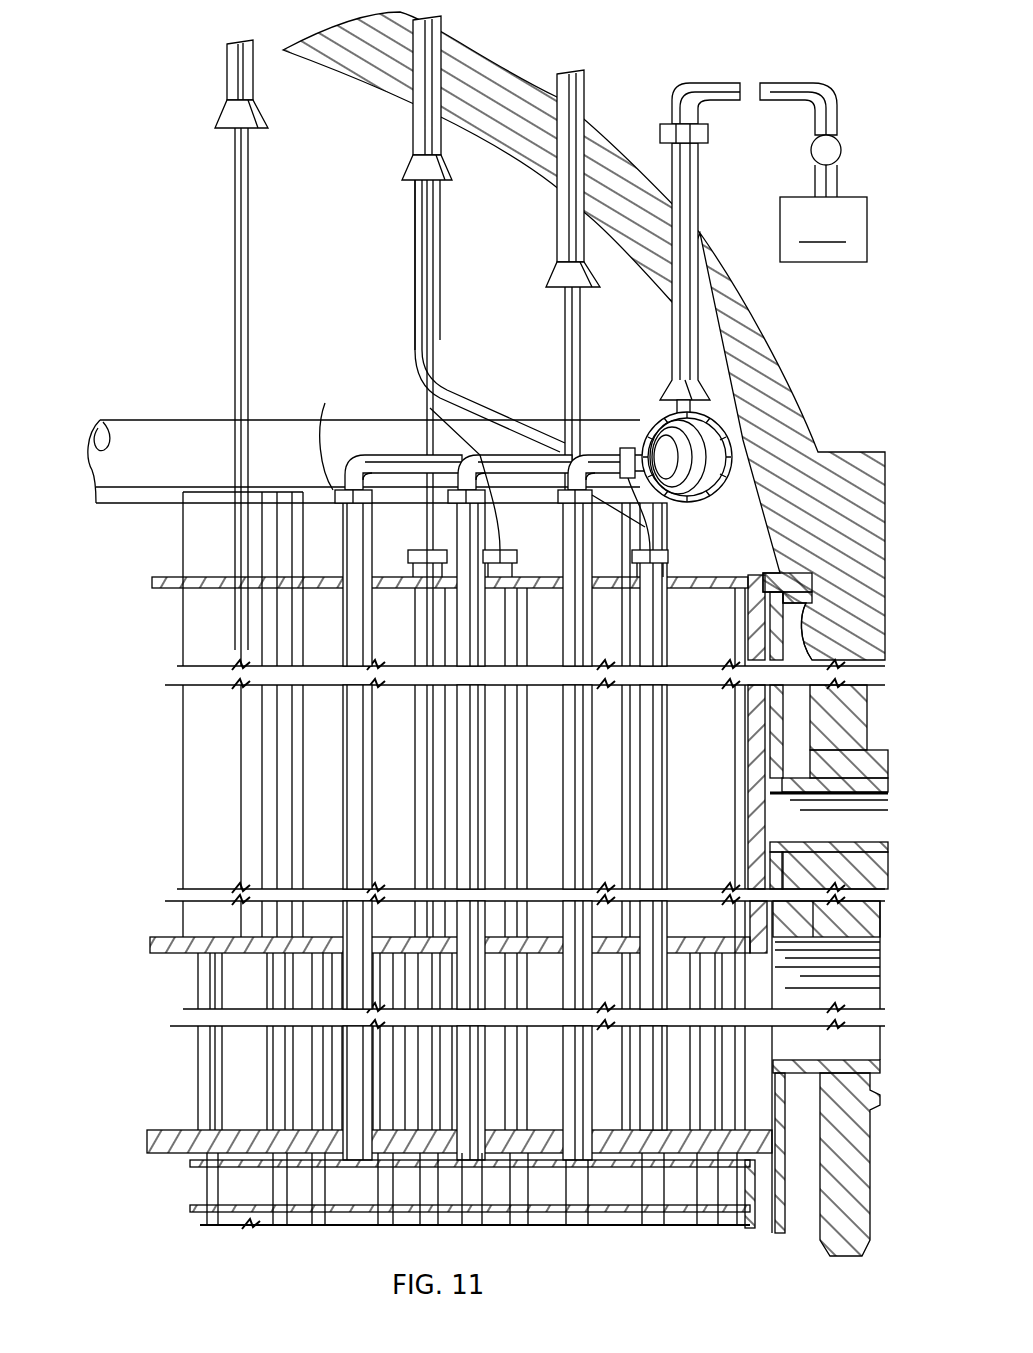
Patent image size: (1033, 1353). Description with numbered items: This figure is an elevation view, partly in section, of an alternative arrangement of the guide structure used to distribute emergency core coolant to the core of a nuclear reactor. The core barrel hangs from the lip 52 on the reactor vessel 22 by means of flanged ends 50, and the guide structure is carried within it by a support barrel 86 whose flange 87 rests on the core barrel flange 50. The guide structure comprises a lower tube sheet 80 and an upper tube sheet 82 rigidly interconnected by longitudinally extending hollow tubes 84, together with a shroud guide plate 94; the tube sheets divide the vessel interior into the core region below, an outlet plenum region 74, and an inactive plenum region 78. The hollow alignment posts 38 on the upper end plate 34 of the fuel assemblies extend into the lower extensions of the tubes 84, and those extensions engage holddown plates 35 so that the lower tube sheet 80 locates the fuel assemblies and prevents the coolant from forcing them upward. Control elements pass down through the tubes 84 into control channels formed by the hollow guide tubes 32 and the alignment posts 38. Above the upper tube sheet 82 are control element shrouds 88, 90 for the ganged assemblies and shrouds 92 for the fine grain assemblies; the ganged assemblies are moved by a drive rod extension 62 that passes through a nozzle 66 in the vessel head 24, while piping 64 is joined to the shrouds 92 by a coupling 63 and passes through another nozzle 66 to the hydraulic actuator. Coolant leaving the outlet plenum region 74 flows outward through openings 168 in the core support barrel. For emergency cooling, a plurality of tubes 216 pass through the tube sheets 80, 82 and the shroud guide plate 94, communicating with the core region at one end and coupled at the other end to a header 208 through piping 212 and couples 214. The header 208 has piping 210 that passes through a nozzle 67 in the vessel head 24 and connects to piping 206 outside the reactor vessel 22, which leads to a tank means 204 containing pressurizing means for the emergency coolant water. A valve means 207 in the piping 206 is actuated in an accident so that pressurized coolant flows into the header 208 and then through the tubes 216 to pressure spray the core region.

The reactor vessel 22 is at (828, 1240).
The vessel head 24 is at (768, 345).
The hollow guide tubes 32 is at (265, 1226).
The upper end plate 34 is at (195, 1208).
The holddown plates 35 is at (192, 1163).
The hollow alignment posts 38 is at (208, 1182).
The flanged ends 50 is at (796, 592).
The lip 52 is at (815, 600).
The drive rod extension 62 is at (246, 186).
The coupling 63 is at (420, 552).
The piping 64 is at (420, 240).
The nozzles 66 is at (232, 86).
The nozzle 67 is at (676, 340).
The outlet plenum region 74 is at (260, 1063).
The inactive plenum region 78 is at (408, 745).
The lower tube sheet 80 is at (177, 1132).
The upper tube sheet 82 is at (720, 946).
The hollow tubes 84 is at (210, 985).
The support barrel 86 is at (755, 752).
The flange 87 is at (780, 578).
The control element shroud 88 is at (192, 630).
The control element shroud 90 is at (613, 630).
The shrouds 92 is at (425, 627).
The shroud guide plate 94 is at (680, 577).
The openings 168 is at (800, 944).
The tank means 204 is at (823, 229).
The piping 206 is at (712, 84).
The valve means 207 is at (810, 152).
The header 208 is at (152, 437).
The piping 210 is at (650, 428).
The piping 212 is at (385, 455).
The couples 214 is at (320, 440).
The tubes 216 is at (363, 812).